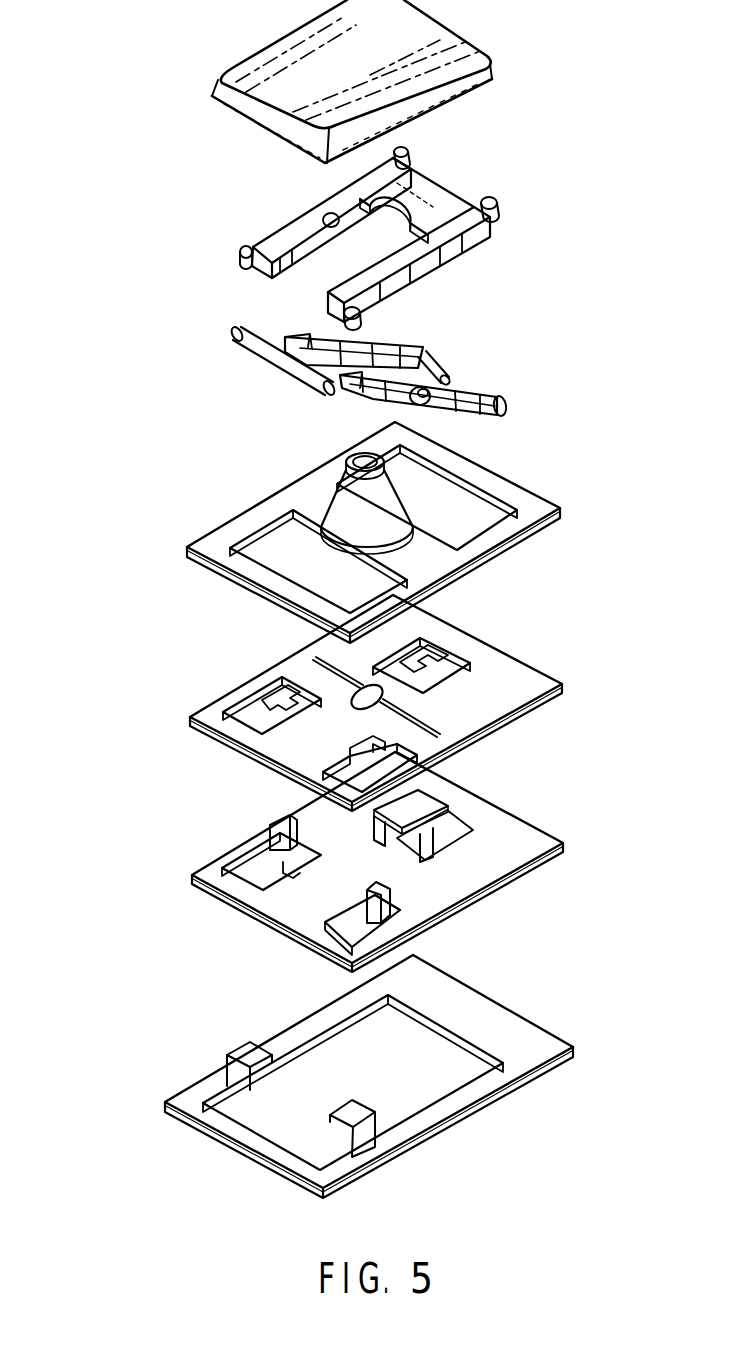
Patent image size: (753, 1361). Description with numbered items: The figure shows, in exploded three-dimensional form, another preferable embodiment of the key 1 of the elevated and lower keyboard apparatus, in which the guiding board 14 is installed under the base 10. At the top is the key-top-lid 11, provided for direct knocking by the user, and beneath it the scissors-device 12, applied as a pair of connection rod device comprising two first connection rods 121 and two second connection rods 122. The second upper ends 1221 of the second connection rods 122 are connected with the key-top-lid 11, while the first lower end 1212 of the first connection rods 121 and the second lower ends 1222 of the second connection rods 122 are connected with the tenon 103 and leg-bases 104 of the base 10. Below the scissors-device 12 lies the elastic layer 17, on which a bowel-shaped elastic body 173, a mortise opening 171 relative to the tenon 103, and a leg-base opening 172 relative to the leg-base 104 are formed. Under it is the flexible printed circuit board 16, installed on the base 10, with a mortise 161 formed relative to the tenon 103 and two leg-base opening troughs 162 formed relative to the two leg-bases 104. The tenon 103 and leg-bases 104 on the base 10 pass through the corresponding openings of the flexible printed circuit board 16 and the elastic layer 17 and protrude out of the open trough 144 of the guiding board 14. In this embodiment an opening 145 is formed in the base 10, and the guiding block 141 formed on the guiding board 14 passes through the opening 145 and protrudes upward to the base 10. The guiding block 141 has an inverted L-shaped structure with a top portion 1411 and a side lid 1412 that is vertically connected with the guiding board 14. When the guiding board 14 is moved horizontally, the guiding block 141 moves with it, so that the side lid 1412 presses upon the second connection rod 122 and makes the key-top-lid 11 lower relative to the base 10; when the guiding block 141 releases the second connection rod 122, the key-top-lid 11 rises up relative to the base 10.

The key 1 is at (150, 504).
The key-top-lid 11 is at (491, 63).
The scissors-device 12 is at (613, 276).
The first connection rod 121 is at (402, 344).
The first lower end 1212 is at (433, 362).
The second connection rod 122 is at (463, 253).
The second upper end 1221 is at (413, 150).
The second lower end 1222 is at (240, 254).
The elastic layer 17 is at (484, 558).
The mortise opening 171 is at (447, 482).
The leg-base opening 172 is at (282, 540).
The bowel-shaped elastic body 173 is at (392, 505).
The flexible printed circuit board 16 is at (560, 673).
The mortise 161 is at (445, 655).
The leg-base opening trough 162 is at (265, 681).
The base 10 is at (510, 819).
The tenon 103 is at (433, 808).
The leg-base 104 is at (268, 832).
The opening 145 is at (388, 926).
The guiding board 14 is at (192, 1087).
The open trough 144 is at (433, 1050).
The guiding block 141 is at (616, 1087).
The tab top 1411 is at (372, 1104).
The side lid 1412 is at (363, 1137).